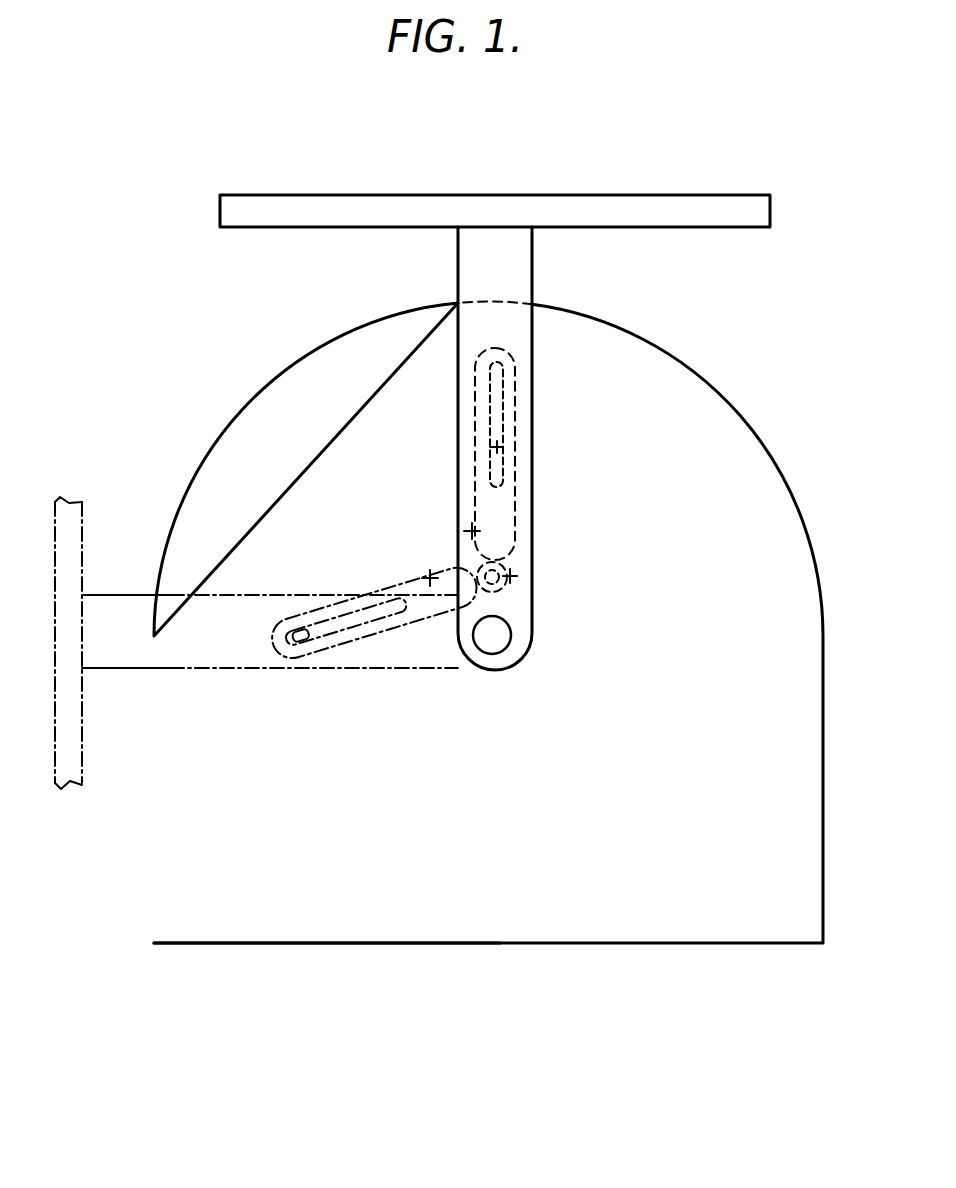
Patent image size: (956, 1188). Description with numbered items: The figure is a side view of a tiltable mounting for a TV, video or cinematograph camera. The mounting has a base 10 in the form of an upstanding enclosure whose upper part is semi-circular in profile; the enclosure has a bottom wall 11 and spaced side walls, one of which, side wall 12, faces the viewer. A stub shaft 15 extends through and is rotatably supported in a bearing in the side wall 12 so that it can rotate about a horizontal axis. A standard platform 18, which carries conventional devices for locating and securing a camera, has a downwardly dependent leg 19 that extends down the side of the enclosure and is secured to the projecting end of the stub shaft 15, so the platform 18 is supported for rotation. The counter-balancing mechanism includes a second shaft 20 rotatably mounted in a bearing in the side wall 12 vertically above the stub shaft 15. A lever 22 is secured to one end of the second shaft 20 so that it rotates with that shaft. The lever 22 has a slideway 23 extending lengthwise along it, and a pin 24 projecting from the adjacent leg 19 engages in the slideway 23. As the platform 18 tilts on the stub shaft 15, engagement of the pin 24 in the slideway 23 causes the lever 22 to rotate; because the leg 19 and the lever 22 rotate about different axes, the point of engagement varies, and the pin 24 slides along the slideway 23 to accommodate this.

The base 10 is at (168, 328).
The bottom wall 11 is at (470, 947).
The side wall 12 is at (298, 910).
The stub shaft 15 is at (493, 640).
The standard platform 18 is at (410, 205).
The leg 19 is at (460, 268).
The second shaft 20 is at (518, 576).
The lever 22 is at (462, 533).
The slideway 23 is at (493, 388).
The pin 24 is at (490, 447).